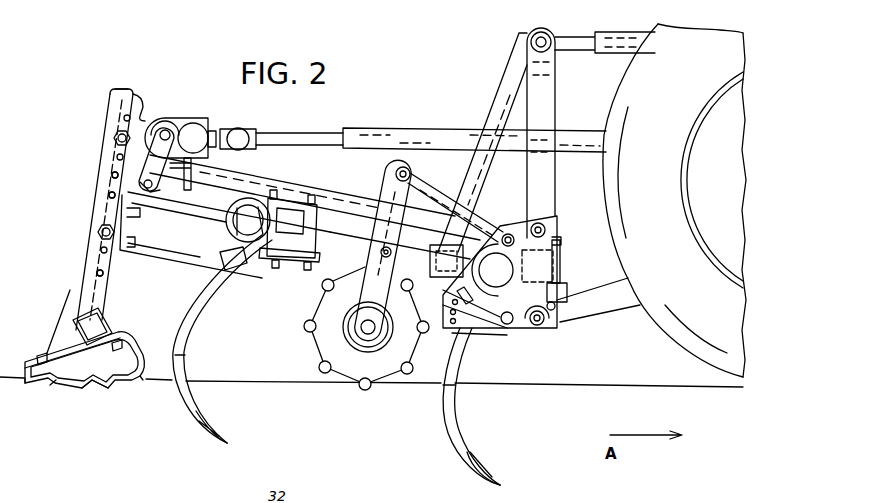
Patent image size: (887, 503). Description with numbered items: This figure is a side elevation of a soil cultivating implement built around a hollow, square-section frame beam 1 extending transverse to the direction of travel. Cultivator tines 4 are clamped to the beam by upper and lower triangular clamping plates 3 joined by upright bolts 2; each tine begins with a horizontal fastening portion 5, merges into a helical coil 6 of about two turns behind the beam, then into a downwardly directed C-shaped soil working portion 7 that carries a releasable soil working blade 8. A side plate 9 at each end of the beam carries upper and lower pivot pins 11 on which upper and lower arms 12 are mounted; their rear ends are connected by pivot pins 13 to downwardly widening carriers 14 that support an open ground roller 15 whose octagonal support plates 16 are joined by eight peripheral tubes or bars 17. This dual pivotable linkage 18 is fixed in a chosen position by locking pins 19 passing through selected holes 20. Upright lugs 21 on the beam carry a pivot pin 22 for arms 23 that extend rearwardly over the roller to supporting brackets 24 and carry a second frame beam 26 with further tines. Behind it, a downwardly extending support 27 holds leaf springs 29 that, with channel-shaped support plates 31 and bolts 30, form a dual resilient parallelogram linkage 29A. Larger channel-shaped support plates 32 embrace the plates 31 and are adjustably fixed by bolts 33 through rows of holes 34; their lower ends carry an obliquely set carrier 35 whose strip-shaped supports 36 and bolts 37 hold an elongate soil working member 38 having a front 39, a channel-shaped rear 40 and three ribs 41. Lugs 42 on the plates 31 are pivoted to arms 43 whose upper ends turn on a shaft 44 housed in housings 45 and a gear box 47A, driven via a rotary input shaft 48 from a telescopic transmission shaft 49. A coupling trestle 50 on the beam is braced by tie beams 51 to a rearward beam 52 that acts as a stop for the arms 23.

The frame beam 1 is at (558, 264).
The upright bolts 2 is at (306, 271).
The clamping plates 3 is at (306, 200).
The cultivator tine 4 is at (190, 356).
The fastening portion 5 is at (316, 254).
The helical coil 6 is at (236, 200).
The soil working portion 7 is at (187, 400).
The soil working blades 8 is at (225, 438).
The side plates 9 is at (488, 336).
The pivot pins 11 is at (508, 233).
The upper and lower arms 12 is at (442, 190).
The pivot pins 13 is at (403, 165).
The carriers 14 is at (395, 177).
The ground roller 15 is at (320, 357).
The support plates 16 is at (342, 377).
The tubes or bars 17 is at (364, 391).
The dual pivotable linkage 18 is at (423, 293).
The locking pins 19 is at (438, 285).
The holes 20 is at (432, 330).
The upright lugs 21 is at (560, 236).
The pivot pin 22 is at (545, 226).
The arms 23 is at (348, 193).
The supporting brackets 24 is at (197, 182).
The second frame beam 26 is at (308, 228).
The support 27 is at (237, 268).
The leaf springs 29 is at (176, 212).
The dual resilient parallelogram linkage 29A is at (204, 258).
The bolts 30 is at (142, 212).
The support plates 31 is at (128, 87).
The support plates 32 is at (118, 100).
The bolts 33 is at (114, 138).
The holes 34 is at (109, 195).
The carrier 35 is at (110, 312).
The strip-shaped supports 36 is at (80, 352).
The bolts 37 is at (42, 354).
The elongate soil working member 38 is at (56, 392).
The front 39 is at (142, 382).
The rear 40 is at (28, 388).
The ribs 41 is at (106, 392).
The lugs 42 is at (157, 194).
The arms 43 is at (143, 95).
The shaft 44 is at (165, 128).
The housings 45 is at (203, 128).
The gear box 47A is at (197, 112).
The rotary input shaft 48 is at (240, 128).
The telescopic transmission shaft 49 is at (462, 128).
The coupling member or trestle 50 is at (550, 96).
The tie beams 51 is at (508, 80).
The beam 52 is at (428, 250).